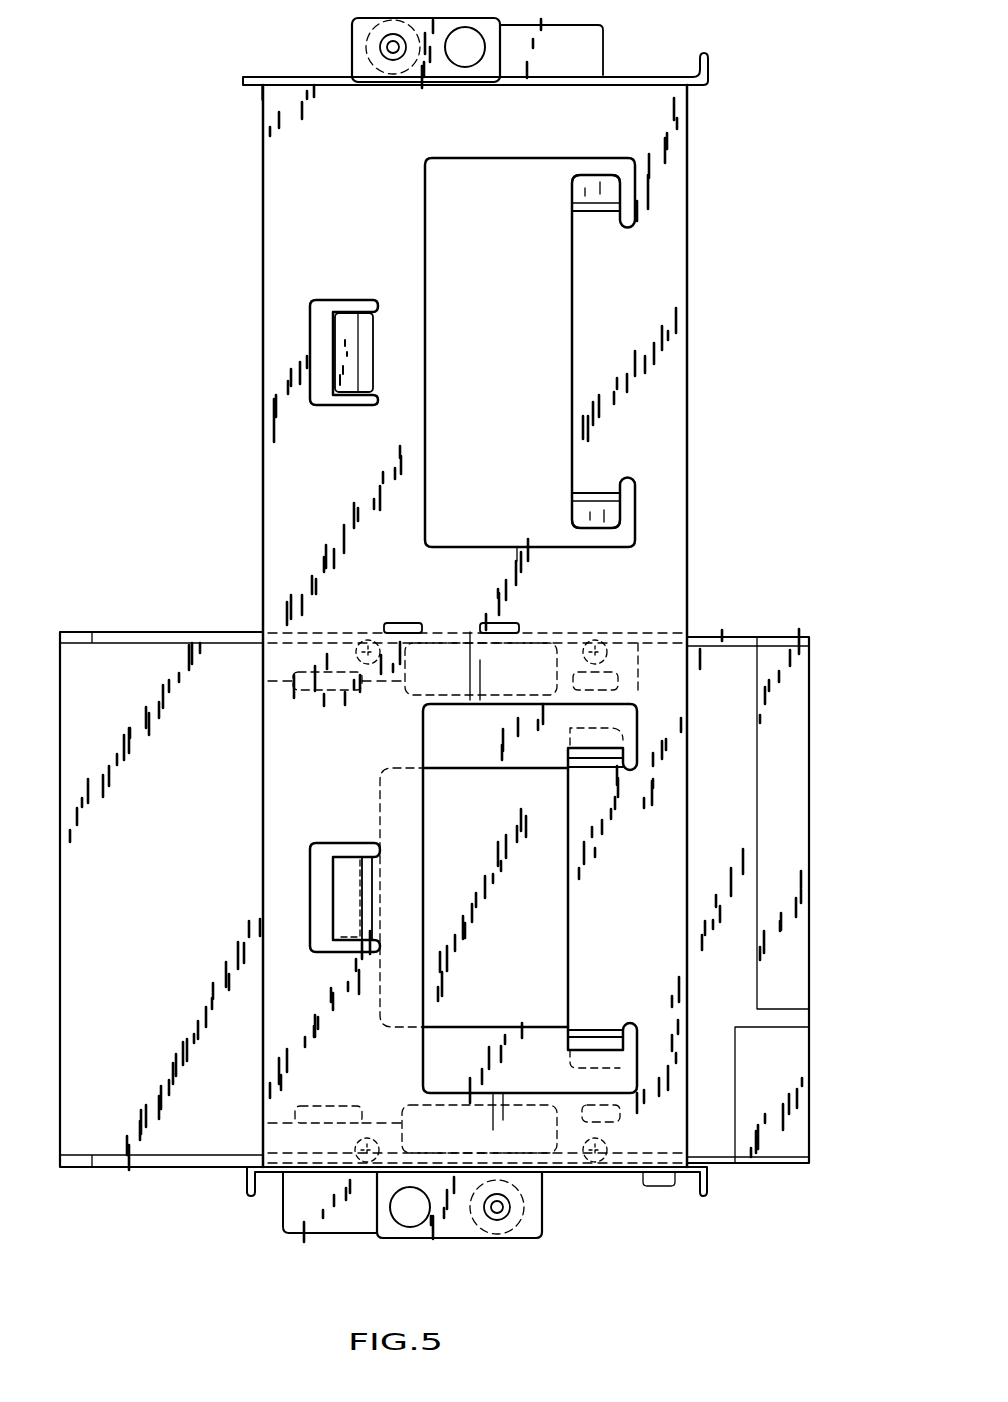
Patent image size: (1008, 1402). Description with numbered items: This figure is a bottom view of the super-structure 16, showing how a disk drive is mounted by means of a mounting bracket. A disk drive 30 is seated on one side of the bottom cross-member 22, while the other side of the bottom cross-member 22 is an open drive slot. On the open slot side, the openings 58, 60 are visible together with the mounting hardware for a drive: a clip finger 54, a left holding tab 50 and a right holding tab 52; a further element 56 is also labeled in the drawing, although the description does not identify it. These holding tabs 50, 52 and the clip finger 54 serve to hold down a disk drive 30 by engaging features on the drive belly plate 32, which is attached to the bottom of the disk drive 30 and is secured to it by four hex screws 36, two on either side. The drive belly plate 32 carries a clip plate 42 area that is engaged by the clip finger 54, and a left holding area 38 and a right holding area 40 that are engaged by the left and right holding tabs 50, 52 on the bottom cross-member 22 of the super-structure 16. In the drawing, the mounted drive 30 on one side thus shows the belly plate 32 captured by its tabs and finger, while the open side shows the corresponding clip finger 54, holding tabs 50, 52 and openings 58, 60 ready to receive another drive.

The super-structure 16 is at (259, 243).
The bottom cross-member 22 is at (318, 150).
The disk drive 30 is at (134, 655).
The drive belly plate 32 is at (495, 1025).
The hex screws 36 is at (612, 1183).
The left holding area 38 is at (598, 738).
The right holding area 40 is at (597, 1054).
The clip plate 42 is at (348, 868).
The left holding tab 50 is at (597, 190).
The right holding tab 52 is at (595, 503).
The clip finger 54 is at (345, 330).
The top connector block 56 is at (352, 45).
The opening 58 is at (514, 398).
The opening 60 is at (335, 346).